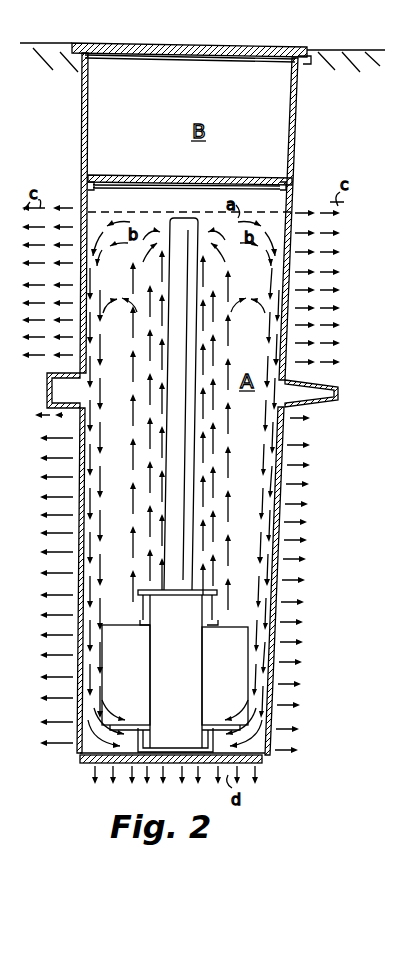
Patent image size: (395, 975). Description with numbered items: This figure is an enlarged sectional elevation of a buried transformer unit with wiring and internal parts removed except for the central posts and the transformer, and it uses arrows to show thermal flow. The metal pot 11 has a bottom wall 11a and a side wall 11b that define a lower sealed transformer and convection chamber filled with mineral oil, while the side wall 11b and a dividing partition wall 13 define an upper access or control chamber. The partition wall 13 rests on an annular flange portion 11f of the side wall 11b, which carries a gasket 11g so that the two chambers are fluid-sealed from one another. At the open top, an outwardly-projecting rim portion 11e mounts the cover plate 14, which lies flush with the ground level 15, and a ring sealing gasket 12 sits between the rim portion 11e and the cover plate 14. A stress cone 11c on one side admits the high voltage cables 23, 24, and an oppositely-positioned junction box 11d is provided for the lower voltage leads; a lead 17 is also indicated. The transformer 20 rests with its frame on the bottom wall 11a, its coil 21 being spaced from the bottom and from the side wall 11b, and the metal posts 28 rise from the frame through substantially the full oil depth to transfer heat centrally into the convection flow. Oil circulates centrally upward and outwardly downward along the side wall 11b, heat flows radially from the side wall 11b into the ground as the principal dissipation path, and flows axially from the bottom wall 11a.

The pot 11 is at (298, 116).
The bottom wall 11a is at (88, 763).
The side wall 11b is at (82, 112).
The stress cone 11c is at (325, 388).
The potting or junction box 11d is at (50, 375).
The flange or rim portion 11e is at (311, 64).
The annular flange portion 11f is at (105, 188).
The gasket 11g is at (205, 186).
The ring sealing gasket 12 is at (222, 59).
The partition wall 13 is at (147, 175).
The cover plate 14 is at (270, 32).
The ground level 15 is at (358, 50).
The lead 17 is at (9, 655).
The transformer 20 is at (185, 672).
The coil 21 is at (237, 690).
The high voltage cable 23 is at (9, 695).
The high voltage cable 24 is at (11, 675).
The posts 28 is at (194, 417).